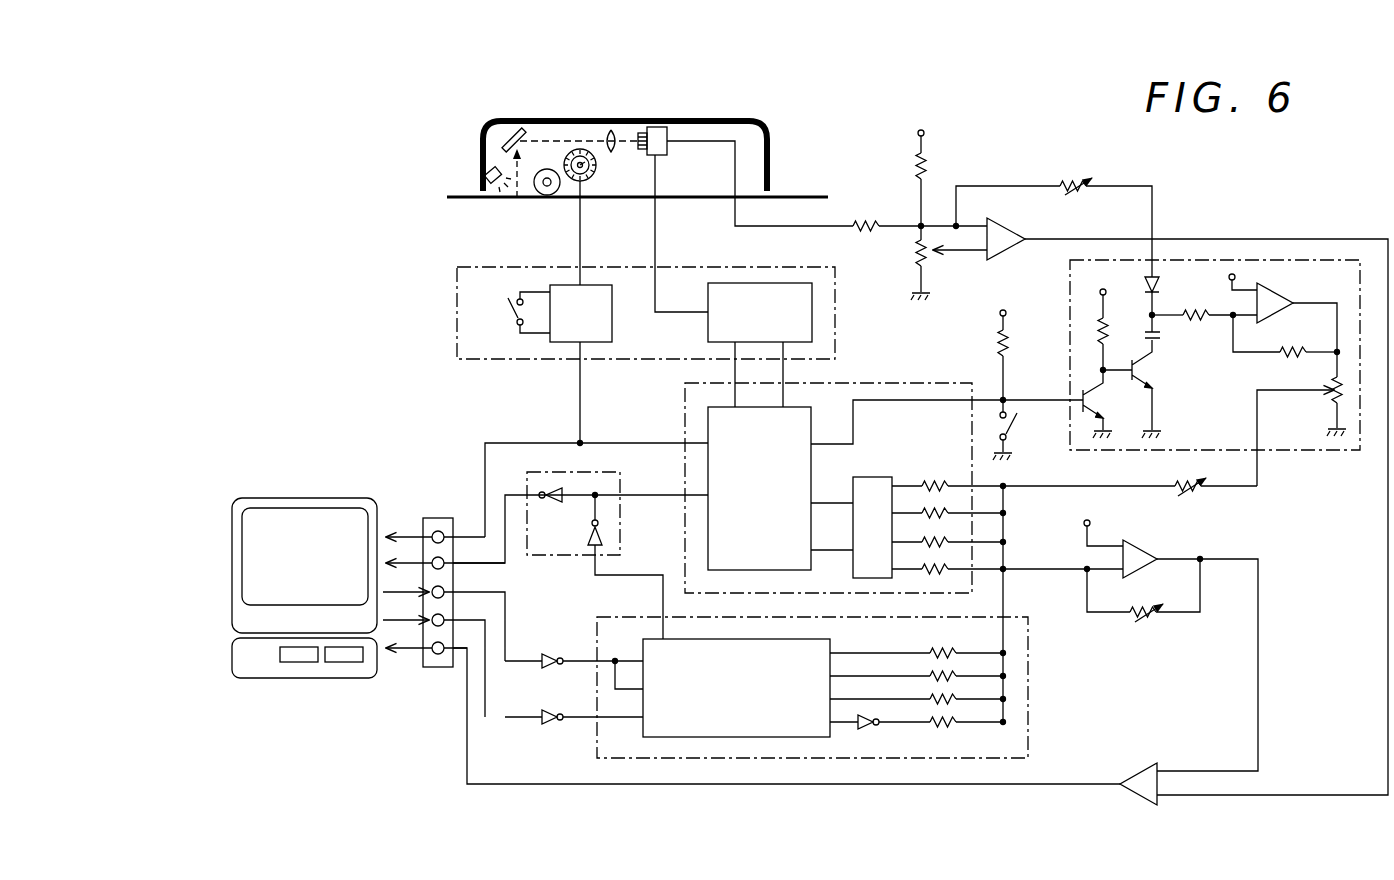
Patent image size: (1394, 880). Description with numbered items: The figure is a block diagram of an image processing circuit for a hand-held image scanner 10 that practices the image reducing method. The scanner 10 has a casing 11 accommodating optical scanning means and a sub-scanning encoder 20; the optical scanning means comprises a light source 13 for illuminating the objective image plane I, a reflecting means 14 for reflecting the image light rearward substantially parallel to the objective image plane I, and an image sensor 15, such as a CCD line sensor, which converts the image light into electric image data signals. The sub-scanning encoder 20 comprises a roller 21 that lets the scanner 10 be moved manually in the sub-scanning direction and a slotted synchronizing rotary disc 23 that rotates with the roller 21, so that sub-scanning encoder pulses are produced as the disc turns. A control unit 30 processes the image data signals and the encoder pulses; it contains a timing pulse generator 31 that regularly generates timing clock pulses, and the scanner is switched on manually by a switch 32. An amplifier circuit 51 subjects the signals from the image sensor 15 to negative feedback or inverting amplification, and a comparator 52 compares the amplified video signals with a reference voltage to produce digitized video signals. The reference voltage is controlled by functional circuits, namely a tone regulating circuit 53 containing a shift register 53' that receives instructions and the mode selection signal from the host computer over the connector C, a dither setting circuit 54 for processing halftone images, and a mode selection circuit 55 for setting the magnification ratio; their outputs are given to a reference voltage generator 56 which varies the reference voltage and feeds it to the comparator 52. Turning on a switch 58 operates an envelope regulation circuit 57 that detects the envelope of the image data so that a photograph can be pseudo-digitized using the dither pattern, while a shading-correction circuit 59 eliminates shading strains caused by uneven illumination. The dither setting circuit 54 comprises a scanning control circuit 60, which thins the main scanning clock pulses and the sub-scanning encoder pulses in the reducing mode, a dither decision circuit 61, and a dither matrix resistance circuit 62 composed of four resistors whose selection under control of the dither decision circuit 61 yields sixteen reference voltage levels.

The image scanner 10 is at (710, 106).
The casing 11 is at (770, 128).
The light source 13 is at (486, 172).
The reflecting means 14 is at (510, 134).
The image sensor 15 is at (657, 128).
The sub-scanning encoder 20 is at (566, 327).
The roller 21 is at (538, 191).
The synchronizing rotary disc 23 is at (592, 175).
The control unit 30 is at (455, 311).
The timing pulse generator 31 is at (746, 312).
The switch 32 is at (511, 310).
The amplifier circuit 51 is at (1005, 248).
The comparator 52 is at (1147, 775).
The tone regulating circuit 53 is at (841, 687).
The shift register 53' is at (755, 688).
The dither setting circuit 54 is at (862, 383).
The mode selection circuit 55 is at (562, 557).
The reference voltage generator 56 is at (1100, 622).
The envelope regulation circuit 57 is at (1315, 458).
The switch 58 is at (1015, 425).
The shading-correction circuit 59 is at (1196, 492).
The scanning control circuit 60 is at (755, 537).
The dither decision circuit 61 is at (872, 477).
The dither matrix resistance circuit 62 is at (940, 578).
The connector C is at (438, 520).
The objective image plane I is at (810, 196).